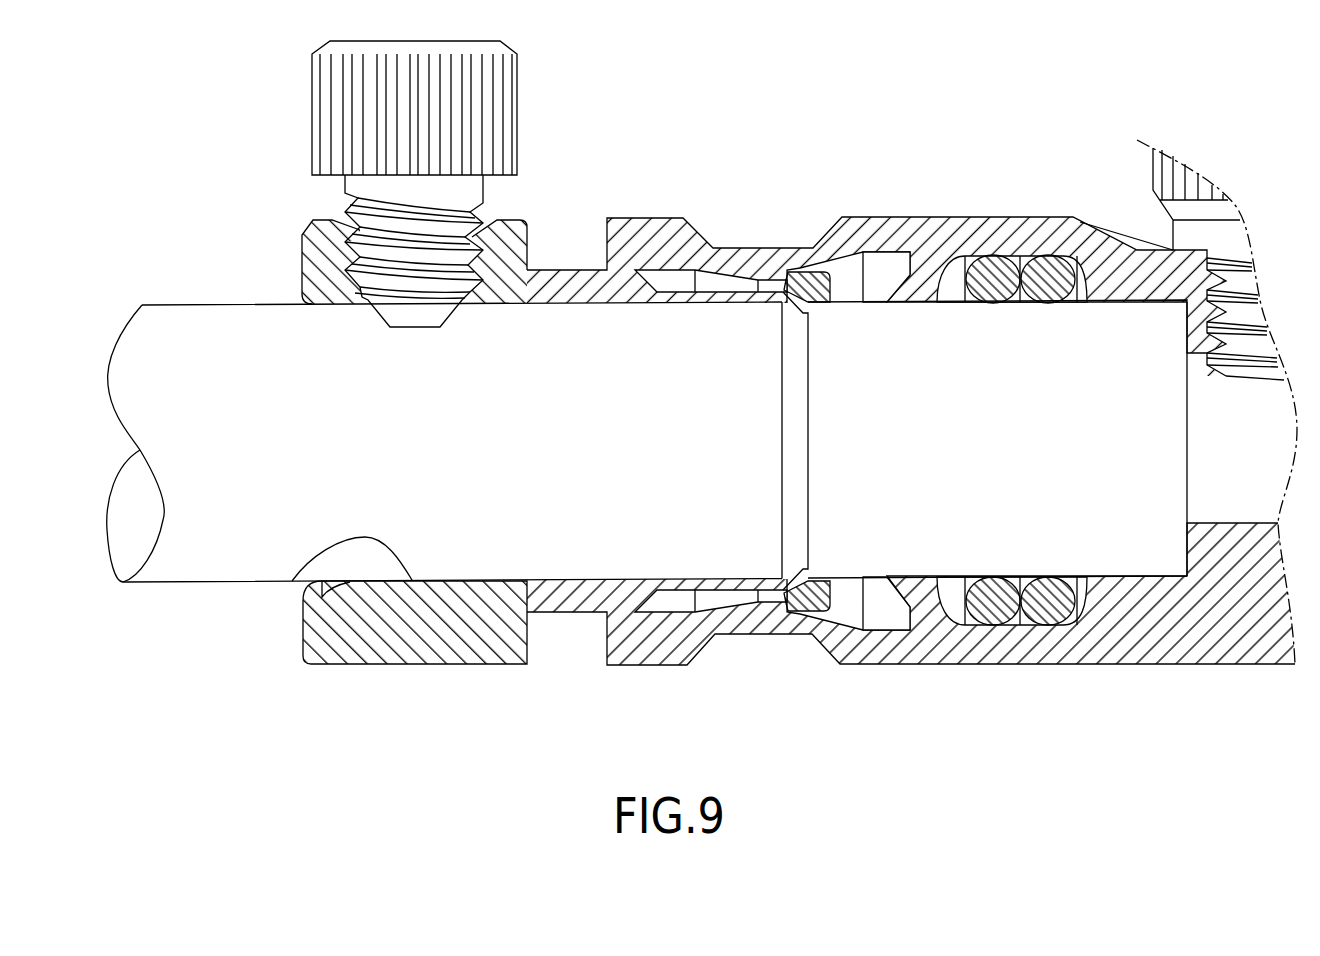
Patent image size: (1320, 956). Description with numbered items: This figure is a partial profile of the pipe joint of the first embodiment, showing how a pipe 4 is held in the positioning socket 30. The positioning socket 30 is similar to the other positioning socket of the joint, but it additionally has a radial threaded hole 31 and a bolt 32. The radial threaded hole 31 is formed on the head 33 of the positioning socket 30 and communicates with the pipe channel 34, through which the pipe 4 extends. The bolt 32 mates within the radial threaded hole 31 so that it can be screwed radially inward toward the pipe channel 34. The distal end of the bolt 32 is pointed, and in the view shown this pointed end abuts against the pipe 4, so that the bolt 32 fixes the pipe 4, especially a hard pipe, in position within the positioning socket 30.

The pipe 4 is at (205, 332).
The positioning socket 30 is at (570, 290).
The radial threaded hole 31 is at (510, 228).
The bolt 32 is at (343, 127).
The head 33 is at (385, 636).
The pipe channel 34 is at (292, 583).